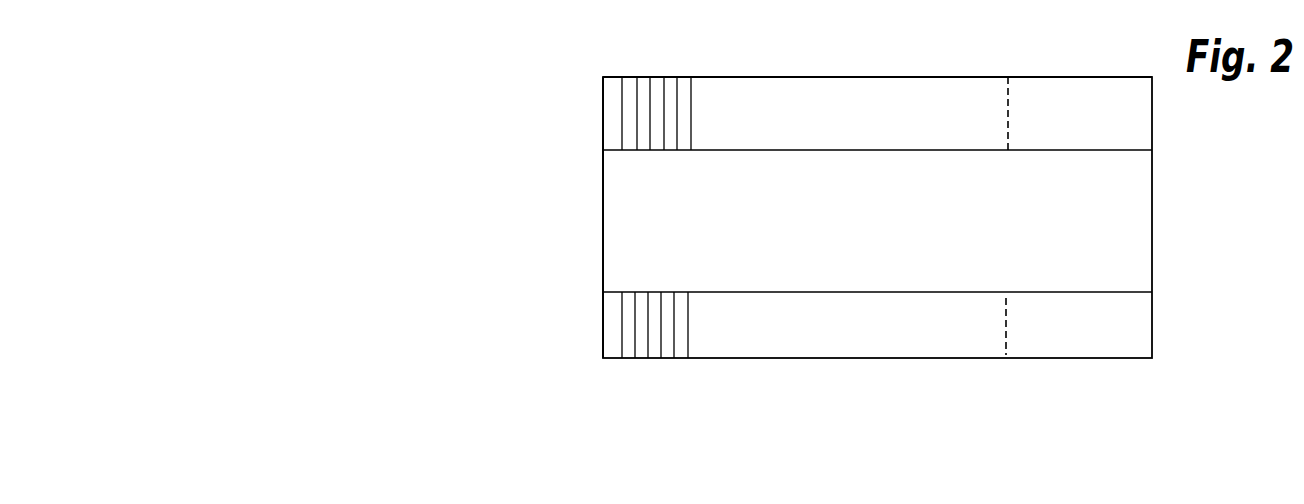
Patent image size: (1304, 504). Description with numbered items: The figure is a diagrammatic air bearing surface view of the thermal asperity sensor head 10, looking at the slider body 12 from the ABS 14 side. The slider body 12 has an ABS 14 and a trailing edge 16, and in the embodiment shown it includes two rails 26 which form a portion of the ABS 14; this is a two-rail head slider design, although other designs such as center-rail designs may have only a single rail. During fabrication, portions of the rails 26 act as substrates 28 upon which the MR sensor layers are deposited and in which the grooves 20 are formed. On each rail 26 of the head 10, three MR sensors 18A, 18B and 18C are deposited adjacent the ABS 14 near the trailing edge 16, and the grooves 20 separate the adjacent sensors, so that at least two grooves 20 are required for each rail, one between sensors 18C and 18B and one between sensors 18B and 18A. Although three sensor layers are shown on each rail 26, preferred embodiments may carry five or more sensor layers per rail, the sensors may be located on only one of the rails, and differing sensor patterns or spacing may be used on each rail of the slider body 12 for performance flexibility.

The thermal asperity sensor head 10 is at (532, 160).
The slider body 12 is at (783, 77).
The ABS 14 is at (1130, 228).
The trailing edge 16 is at (603, 226).
The MR sensor 18A is at (602, 392).
The MR sensor 18B is at (658, 393).
The MR sensor 18C is at (720, 393).
The grooves 20 is at (627, 150).
The rails 26 is at (848, 137).
The substrates 28 is at (715, 125).